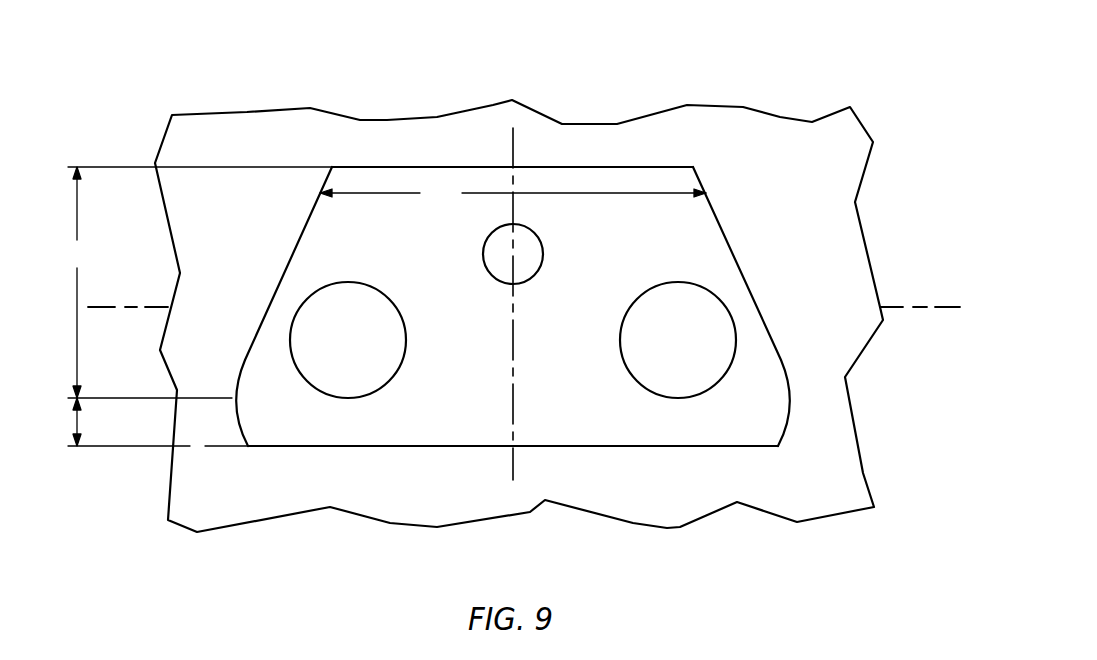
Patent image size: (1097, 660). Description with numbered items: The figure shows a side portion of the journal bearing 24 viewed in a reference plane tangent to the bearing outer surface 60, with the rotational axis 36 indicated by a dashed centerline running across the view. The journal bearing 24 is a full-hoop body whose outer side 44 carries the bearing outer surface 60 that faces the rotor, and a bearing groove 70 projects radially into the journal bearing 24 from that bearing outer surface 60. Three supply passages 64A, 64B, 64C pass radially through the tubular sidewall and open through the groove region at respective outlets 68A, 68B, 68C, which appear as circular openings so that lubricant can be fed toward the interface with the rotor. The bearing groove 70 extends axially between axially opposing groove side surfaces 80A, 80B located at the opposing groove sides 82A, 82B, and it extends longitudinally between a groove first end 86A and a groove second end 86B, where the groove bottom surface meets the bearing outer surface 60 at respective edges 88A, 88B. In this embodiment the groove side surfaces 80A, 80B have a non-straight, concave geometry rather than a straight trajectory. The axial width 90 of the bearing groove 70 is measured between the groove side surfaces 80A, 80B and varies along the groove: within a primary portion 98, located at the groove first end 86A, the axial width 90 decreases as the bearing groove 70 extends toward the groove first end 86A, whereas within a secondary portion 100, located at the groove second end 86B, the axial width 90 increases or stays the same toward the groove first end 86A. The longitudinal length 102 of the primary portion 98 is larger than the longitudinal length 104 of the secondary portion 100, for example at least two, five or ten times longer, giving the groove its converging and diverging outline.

The journal bearing 24 is at (546, 274).
The rotational axis 36 is at (955, 303).
The outer side of the journal bearing 44 is at (519, 298).
The bearing outer surface 60 is at (777, 157).
The first supply passage 64A is at (360, 391).
The first supply passage outlet 68A is at (350, 398).
The second supply passage 64B is at (678, 391).
The second supply passage outlet 68B is at (683, 398).
The third supply passage 64C is at (546, 291).
The third supply passage outlet 68C is at (537, 272).
The bearing groove 70 is at (564, 320).
The first groove side surface 80A is at (252, 306).
The first side of the bearing groove 82A is at (287, 240).
The second groove side surface 80B is at (824, 306).
The second side of the bearing groove 82B is at (787, 353).
The groove first end 86A is at (512, 122).
The first edge 88A is at (580, 165).
The groove second end 86B is at (513, 504).
The second edge 88B is at (583, 446).
The axial width 90 is at (513, 195).
The primary portion of the bearing groove 98 is at (232, 320).
The secondary portion of the bearing groove 100 is at (230, 424).
The longitudinal length of the primary portion 102 is at (196, 282).
The longitudinal length of the secondary portion 104 is at (73, 422).